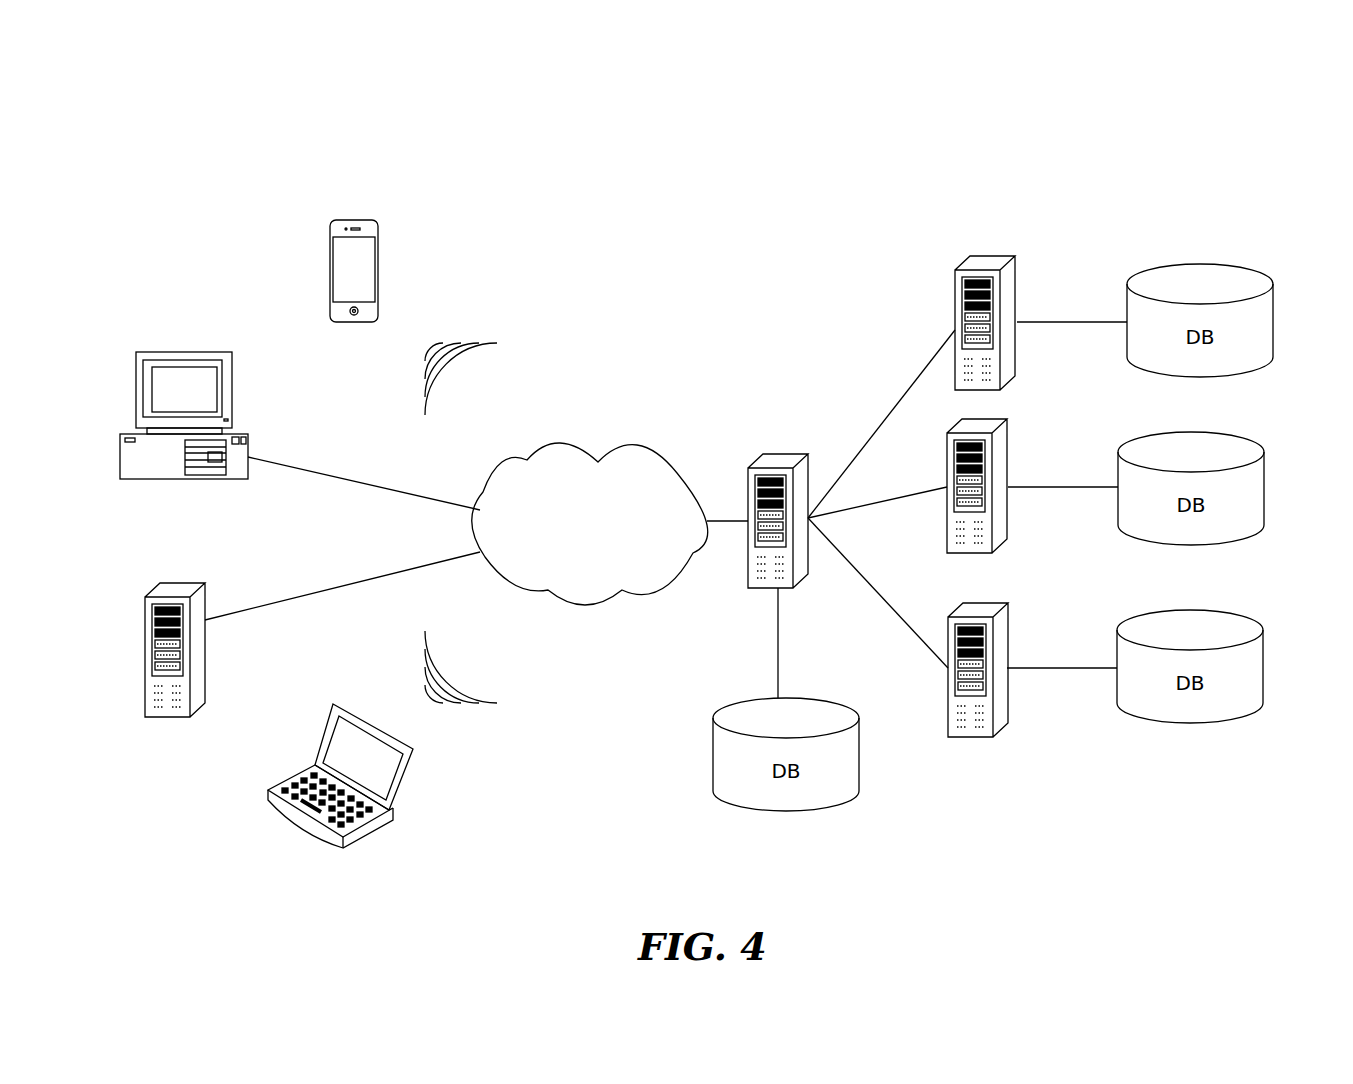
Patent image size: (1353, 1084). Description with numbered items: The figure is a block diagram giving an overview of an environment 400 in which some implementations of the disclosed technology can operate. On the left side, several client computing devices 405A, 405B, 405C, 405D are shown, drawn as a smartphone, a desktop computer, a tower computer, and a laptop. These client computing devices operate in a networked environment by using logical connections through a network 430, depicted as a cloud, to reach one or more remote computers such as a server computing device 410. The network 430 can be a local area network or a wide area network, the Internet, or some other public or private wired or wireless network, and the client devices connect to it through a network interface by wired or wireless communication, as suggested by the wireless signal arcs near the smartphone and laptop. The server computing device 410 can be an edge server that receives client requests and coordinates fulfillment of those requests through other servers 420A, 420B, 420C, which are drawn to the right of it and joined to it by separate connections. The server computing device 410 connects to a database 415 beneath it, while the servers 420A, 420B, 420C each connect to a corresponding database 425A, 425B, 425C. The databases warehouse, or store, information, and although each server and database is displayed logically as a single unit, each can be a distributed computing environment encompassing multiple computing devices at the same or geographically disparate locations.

The environment 400 is at (1075, 139).
The client computing device 405A is at (367, 220).
The client computing device 405B is at (225, 353).
The client computing device 405C is at (195, 582).
The client computing device 405D is at (405, 779).
The server computing device 410 is at (795, 455).
The database 415 is at (835, 704).
The server 420A is at (1003, 268).
The server 420B is at (995, 431).
The server 420C is at (995, 615).
The database 425A is at (1195, 265).
The database 425B is at (1188, 432).
The database 425C is at (1185, 612).
The network 430 is at (645, 445).